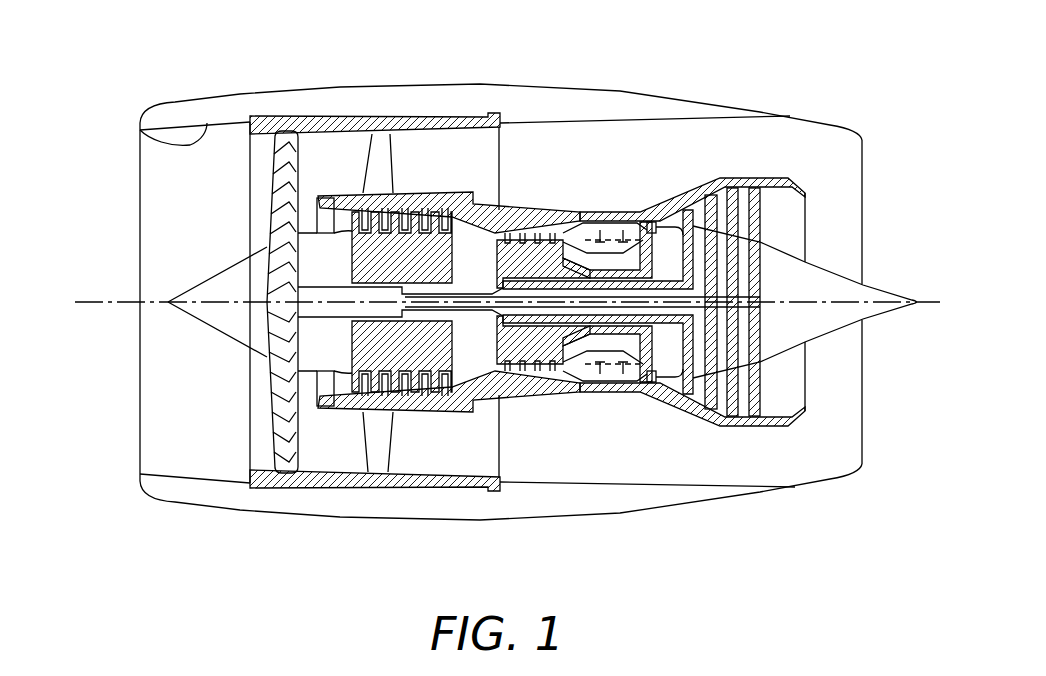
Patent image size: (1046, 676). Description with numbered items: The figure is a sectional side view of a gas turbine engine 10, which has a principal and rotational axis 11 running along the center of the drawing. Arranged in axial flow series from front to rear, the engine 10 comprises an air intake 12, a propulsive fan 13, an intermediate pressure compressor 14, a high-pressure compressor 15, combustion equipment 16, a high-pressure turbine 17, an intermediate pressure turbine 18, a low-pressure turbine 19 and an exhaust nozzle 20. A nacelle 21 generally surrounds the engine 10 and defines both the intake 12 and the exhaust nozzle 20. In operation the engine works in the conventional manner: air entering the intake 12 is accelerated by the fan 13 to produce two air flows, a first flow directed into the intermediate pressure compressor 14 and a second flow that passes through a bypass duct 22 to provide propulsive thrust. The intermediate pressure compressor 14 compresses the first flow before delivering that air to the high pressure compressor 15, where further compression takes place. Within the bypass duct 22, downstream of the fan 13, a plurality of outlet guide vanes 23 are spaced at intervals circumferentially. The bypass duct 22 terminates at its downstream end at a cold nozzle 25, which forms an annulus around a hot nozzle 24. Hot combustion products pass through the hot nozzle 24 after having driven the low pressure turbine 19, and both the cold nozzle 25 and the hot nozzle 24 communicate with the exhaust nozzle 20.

The gas turbine engine 10 is at (118, 169).
The principal and rotational axis 11 is at (95, 301).
The air intake 12 is at (140, 130).
The propulsive fan 13 is at (273, 420).
The intermediate pressure compressor 14 is at (400, 394).
The high-pressure compressor 15 is at (517, 233).
The combustion equipment 16 is at (610, 372).
The high-pressure turbine 17 is at (650, 381).
The intermediate pressure turbine 18 is at (657, 222).
The low-pressure turbine 19 is at (710, 404).
The exhaust nozzle 20 is at (863, 452).
The nacelle 21 is at (758, 105).
The bypass duct 22 is at (445, 170).
The outlet guide vanes 23 is at (380, 147).
The hot nozzle 24 is at (805, 226).
The cold nozzle 25 is at (840, 153).